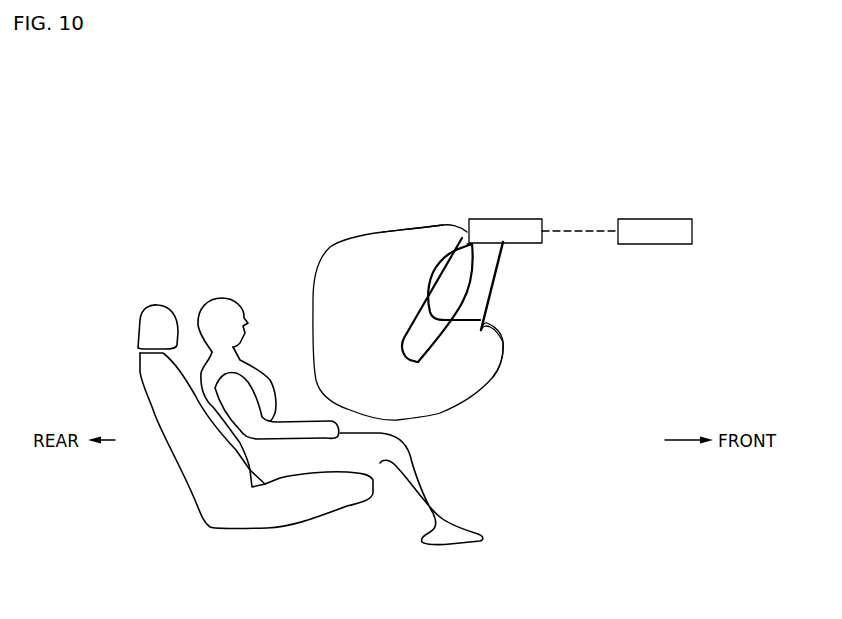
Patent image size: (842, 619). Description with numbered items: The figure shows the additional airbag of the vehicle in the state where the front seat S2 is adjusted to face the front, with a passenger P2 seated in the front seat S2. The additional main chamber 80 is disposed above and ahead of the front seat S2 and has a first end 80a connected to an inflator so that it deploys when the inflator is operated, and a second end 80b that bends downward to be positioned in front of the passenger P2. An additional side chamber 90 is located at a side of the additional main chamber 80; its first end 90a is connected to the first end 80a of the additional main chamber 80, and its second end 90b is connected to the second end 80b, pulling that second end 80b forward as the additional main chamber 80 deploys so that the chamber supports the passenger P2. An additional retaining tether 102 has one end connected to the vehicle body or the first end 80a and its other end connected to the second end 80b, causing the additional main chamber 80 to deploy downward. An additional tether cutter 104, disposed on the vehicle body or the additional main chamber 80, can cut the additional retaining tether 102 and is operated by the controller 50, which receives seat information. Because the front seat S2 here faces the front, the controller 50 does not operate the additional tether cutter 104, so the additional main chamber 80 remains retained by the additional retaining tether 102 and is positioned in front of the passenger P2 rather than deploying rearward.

The additional main chamber 80 is at (343, 260).
The first end of additional main chamber 80a is at (427, 240).
The second end of additional main chamber 80b is at (488, 348).
The additional side chamber 90 is at (452, 280).
The first end of additional side chamber 90a is at (463, 243).
The second end of additional side chamber 90b is at (428, 342).
The additional retaining tether 102 is at (488, 305).
The additional tether cutter 104 is at (525, 219).
The controller 50 is at (662, 219).
The passenger P2 is at (260, 450).
The front seat S2 is at (278, 507).